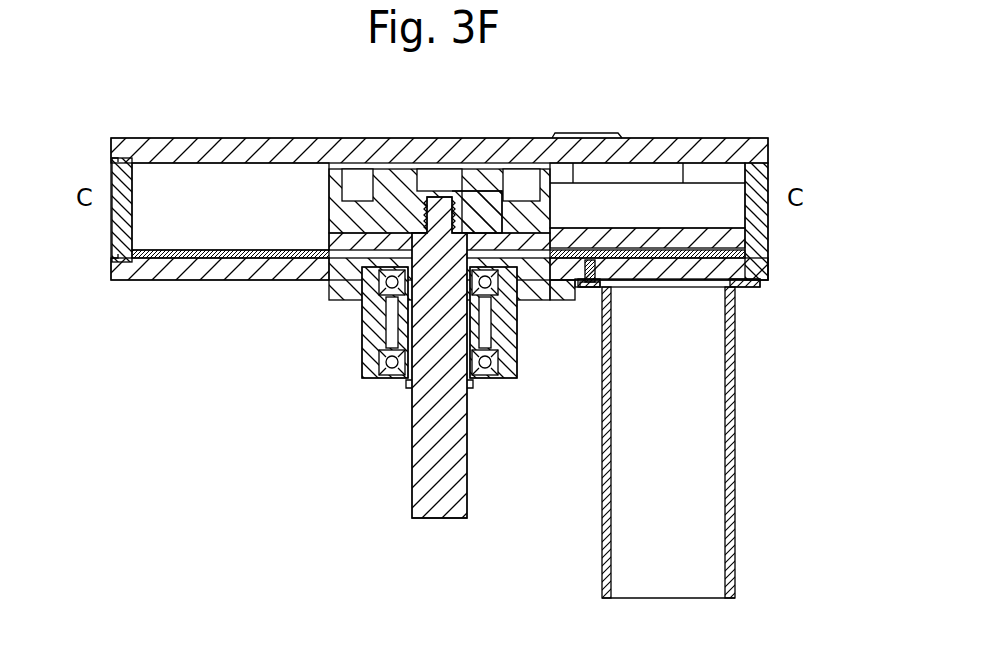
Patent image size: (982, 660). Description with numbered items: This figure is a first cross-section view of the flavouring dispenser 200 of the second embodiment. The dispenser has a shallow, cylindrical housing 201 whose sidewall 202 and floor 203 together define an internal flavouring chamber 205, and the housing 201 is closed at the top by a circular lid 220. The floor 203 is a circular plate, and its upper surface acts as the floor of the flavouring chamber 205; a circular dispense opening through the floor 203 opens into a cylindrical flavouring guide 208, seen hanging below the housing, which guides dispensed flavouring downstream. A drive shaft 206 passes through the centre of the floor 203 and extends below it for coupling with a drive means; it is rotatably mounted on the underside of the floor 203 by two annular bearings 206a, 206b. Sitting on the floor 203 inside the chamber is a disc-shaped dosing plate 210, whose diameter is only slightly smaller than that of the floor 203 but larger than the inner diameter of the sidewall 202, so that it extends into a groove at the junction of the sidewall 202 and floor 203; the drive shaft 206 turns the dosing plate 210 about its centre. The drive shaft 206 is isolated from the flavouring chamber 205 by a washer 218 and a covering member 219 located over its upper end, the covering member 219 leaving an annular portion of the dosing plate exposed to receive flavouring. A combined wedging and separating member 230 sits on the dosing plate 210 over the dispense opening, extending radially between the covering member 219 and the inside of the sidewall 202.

The flavouring dispenser 200 is at (612, 96).
The housing 201 is at (776, 157).
The sidewall 202 is at (118, 238).
The floor 203 is at (220, 268).
The flavouring chamber 205 is at (203, 182).
The drive shaft 206 is at (433, 467).
The annular bearing 206a is at (372, 296).
The annular bearing 206b is at (493, 374).
The flavouring guide 208 is at (735, 482).
The dosing plate 210 is at (175, 258).
The washer 218 is at (393, 245).
The covering member 219 is at (478, 175).
The lid 220 is at (290, 152).
The wedging and separating member 230 is at (702, 185).